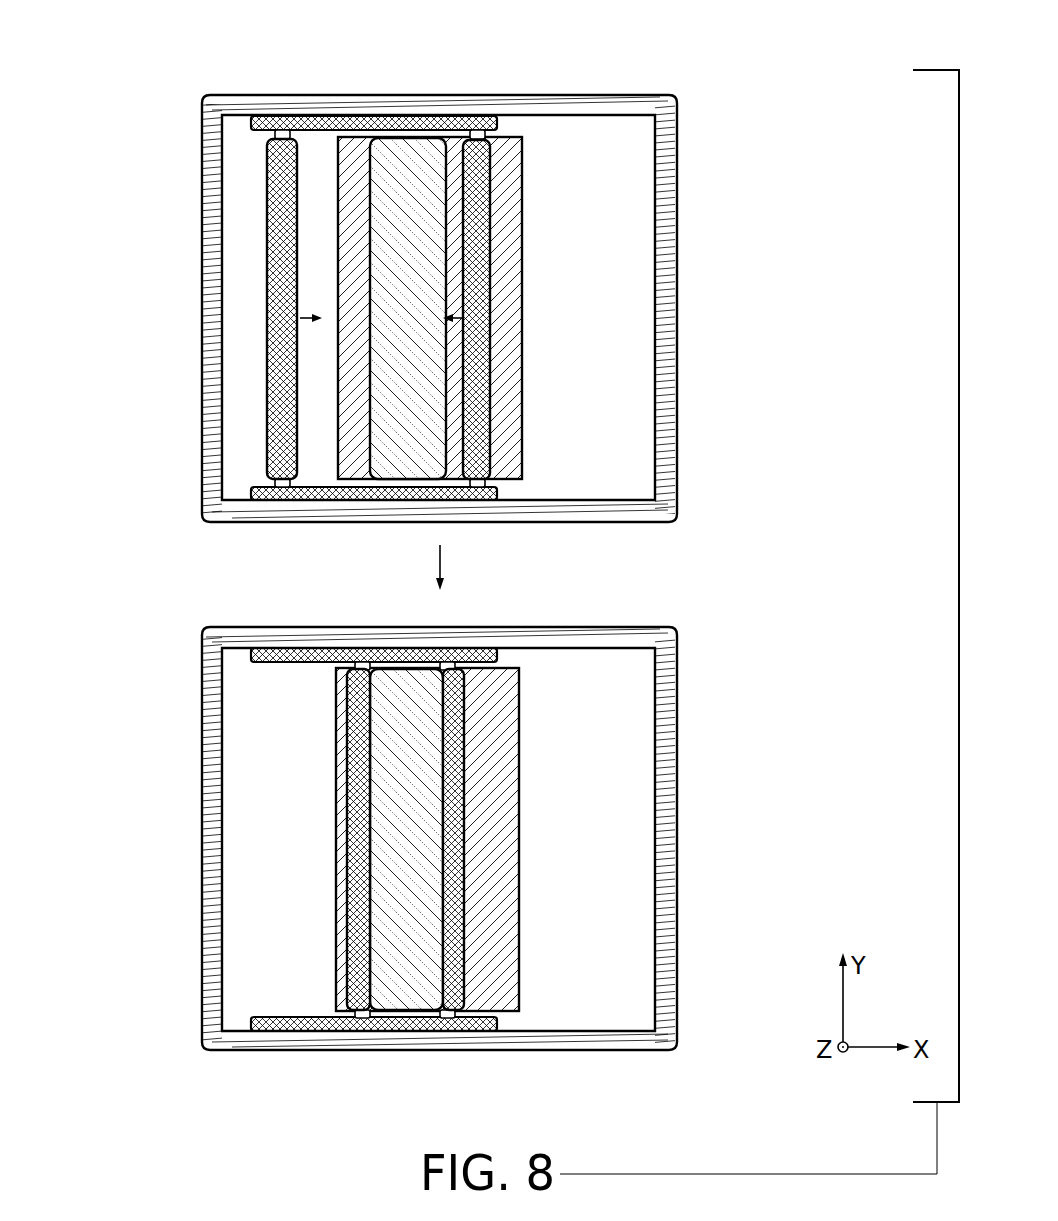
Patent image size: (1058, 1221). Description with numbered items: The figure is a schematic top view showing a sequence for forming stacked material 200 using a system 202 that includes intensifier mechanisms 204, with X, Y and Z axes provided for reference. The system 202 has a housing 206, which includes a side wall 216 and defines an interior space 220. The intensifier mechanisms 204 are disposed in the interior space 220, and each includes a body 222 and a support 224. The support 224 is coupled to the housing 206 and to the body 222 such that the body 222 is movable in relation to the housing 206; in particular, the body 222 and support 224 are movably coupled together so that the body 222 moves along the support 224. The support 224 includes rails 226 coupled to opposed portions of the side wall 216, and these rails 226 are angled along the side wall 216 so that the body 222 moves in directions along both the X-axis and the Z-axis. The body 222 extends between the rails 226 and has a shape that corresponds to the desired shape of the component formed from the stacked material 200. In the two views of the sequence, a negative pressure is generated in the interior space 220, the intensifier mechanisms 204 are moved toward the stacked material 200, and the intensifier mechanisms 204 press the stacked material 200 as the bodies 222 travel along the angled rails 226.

The stacked material 200 is at (505, 257).
The system 202 is at (393, 323).
The intensifier mechanism 204 is at (366, 323).
The housing 206 is at (213, 213).
The side wall 216 is at (213, 447).
The interior space 220 is at (606, 341).
The body 222 is at (267, 415).
The support 224 is at (455, 118).
The rails 226 is at (277, 118).